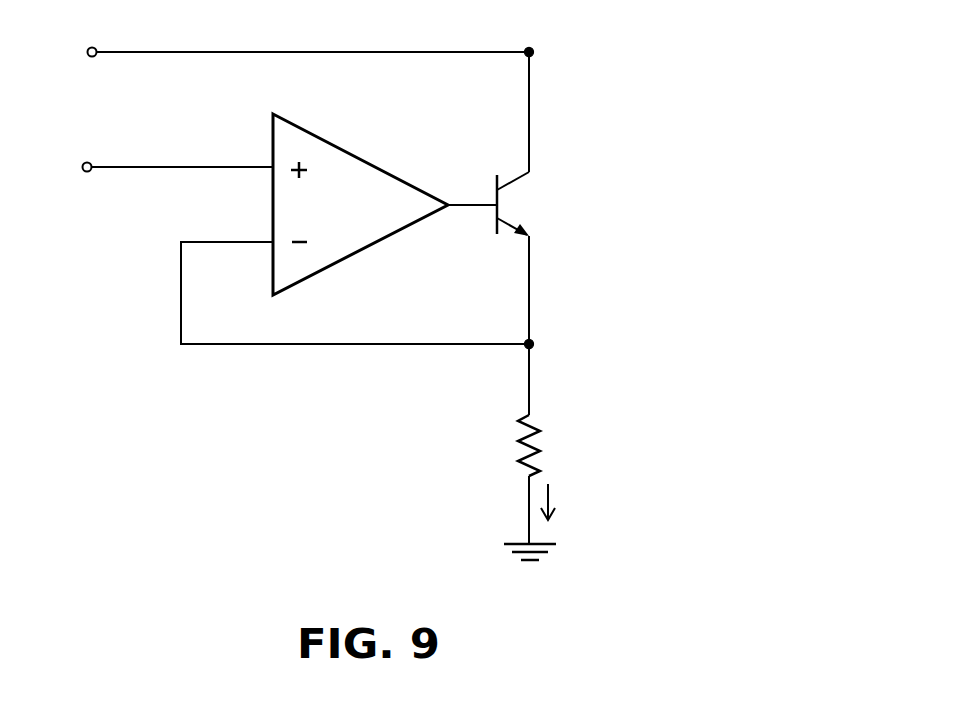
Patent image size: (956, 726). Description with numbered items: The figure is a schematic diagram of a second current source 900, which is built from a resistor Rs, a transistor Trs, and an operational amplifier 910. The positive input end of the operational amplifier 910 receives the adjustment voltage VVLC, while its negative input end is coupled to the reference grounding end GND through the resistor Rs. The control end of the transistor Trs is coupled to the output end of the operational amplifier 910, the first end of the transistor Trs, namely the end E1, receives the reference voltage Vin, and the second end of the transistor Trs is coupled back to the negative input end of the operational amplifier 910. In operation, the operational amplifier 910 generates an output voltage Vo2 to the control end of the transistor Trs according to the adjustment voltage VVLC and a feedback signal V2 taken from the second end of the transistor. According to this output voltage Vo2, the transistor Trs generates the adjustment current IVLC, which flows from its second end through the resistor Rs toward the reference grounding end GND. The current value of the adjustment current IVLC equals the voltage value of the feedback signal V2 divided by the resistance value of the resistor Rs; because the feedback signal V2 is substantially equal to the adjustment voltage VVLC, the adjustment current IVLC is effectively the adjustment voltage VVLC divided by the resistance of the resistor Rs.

The second current source 900 is at (374, 314).
The operational amplifier 910 is at (364, 157).
The transistor Trs is at (532, 233).
The resistor Rs is at (548, 479).
The end E1 is at (531, 36).
The feedback signal V2 is at (507, 329).
The output voltage Vo2 is at (472, 189).
The reference voltage Vin is at (288, 54).
The adjustment voltage VVLC is at (151, 168).
The adjustment current IVLC is at (570, 503).
The reference grounding end GND is at (530, 570).